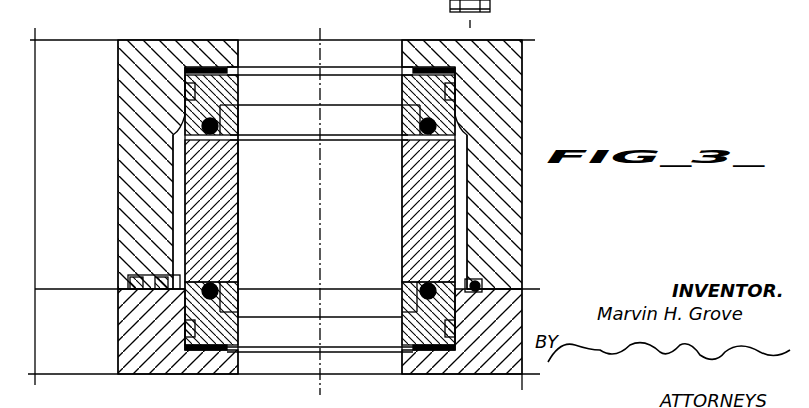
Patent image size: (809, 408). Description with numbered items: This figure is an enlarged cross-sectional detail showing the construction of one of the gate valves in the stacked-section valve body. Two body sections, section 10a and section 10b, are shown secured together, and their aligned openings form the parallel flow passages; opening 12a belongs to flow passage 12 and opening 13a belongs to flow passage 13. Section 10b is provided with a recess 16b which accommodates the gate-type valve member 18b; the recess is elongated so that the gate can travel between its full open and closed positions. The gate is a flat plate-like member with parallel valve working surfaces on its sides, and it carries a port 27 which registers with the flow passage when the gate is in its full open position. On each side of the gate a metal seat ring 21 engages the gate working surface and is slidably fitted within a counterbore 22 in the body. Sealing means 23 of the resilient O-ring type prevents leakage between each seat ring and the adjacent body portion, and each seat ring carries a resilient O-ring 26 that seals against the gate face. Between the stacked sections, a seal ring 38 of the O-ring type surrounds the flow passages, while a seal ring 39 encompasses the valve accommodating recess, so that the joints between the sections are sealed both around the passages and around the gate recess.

The section 10a is at (132, 366).
The section 10b is at (500, 194).
The flow passage 12 is at (95, 50).
The opening 12a is at (55, 48).
The flow passage 13 is at (344, 48).
The opening 13a is at (277, 46).
The recess 16b is at (178, 222).
The valve member 18b is at (443, 231).
The metal seat ring 21 is at (395, 75).
The counterbore 22 is at (457, 92).
The sealing means 23 is at (450, 71).
The resilient O-ring 26 is at (437, 125).
The port 27 is at (245, 193).
The seal ring 38 is at (135, 280).
The seal ring 39 is at (480, 287).